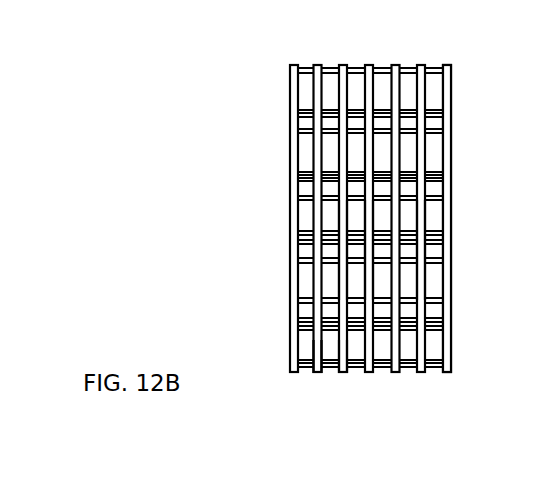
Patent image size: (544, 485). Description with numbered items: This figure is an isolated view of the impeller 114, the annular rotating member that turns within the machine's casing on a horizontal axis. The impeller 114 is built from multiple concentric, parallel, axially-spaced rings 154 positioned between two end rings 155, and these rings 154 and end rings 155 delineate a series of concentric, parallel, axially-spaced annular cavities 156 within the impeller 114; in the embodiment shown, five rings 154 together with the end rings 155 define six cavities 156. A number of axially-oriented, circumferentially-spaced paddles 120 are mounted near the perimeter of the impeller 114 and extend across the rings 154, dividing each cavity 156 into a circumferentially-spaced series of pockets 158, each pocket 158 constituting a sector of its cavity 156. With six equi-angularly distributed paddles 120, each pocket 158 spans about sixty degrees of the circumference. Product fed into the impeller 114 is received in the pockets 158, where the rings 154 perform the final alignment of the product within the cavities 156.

The impeller 114 is at (241, 108).
The paddles 120 is at (437, 98).
The rings 154 is at (447, 66).
The end rings 155 is at (293, 82).
The annular cavities 156 is at (408, 216).
The pockets 158 is at (362, 352).